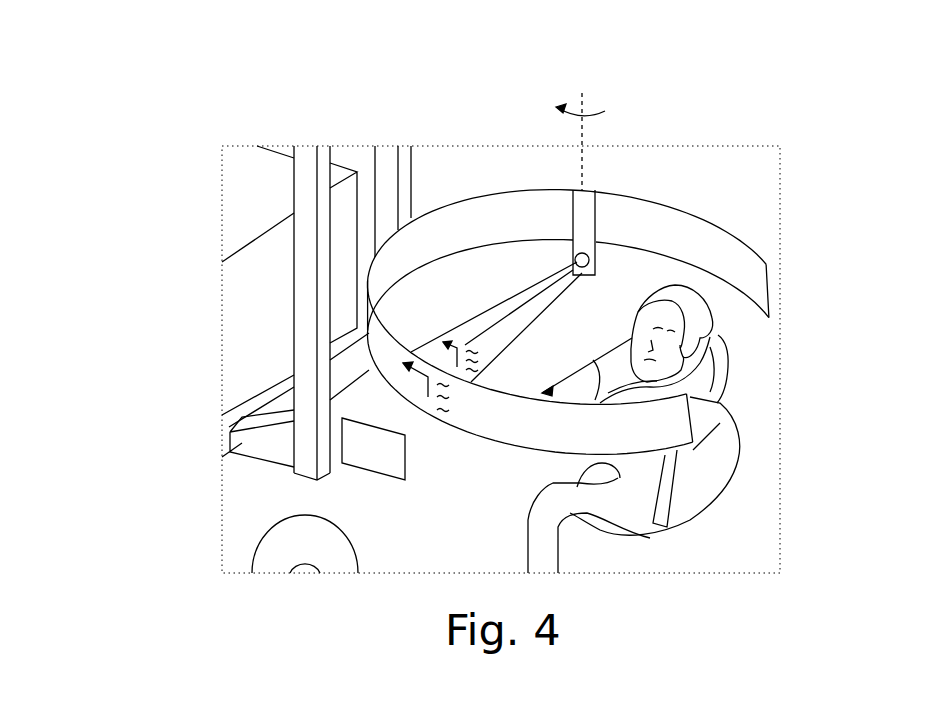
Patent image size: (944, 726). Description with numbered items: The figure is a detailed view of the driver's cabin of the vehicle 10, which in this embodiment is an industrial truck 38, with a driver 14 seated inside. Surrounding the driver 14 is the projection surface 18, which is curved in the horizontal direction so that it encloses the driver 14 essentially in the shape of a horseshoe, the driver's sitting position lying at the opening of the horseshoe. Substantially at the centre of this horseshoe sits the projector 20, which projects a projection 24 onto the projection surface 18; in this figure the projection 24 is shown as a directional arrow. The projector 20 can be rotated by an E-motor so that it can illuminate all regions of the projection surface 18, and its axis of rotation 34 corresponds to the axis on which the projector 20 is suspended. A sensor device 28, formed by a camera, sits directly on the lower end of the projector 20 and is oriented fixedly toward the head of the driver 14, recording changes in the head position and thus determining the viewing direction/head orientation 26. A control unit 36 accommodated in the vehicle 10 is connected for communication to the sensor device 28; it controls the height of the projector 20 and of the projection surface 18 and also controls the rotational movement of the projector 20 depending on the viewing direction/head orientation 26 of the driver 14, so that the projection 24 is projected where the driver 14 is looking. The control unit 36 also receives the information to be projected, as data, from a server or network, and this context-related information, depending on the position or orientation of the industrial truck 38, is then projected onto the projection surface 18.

The vehicle 10 is at (239, 359).
The industrial truck 38 is at (273, 333).
The driver 14 is at (630, 487).
The projection surface 18 is at (740, 256).
The projector 20 is at (570, 256).
The projection 24 is at (433, 420).
The viewing direction/head orientation 26 is at (587, 400).
The sensor device 28 is at (597, 224).
The axis of rotation 34 is at (586, 112).
The control unit 36 is at (362, 472).